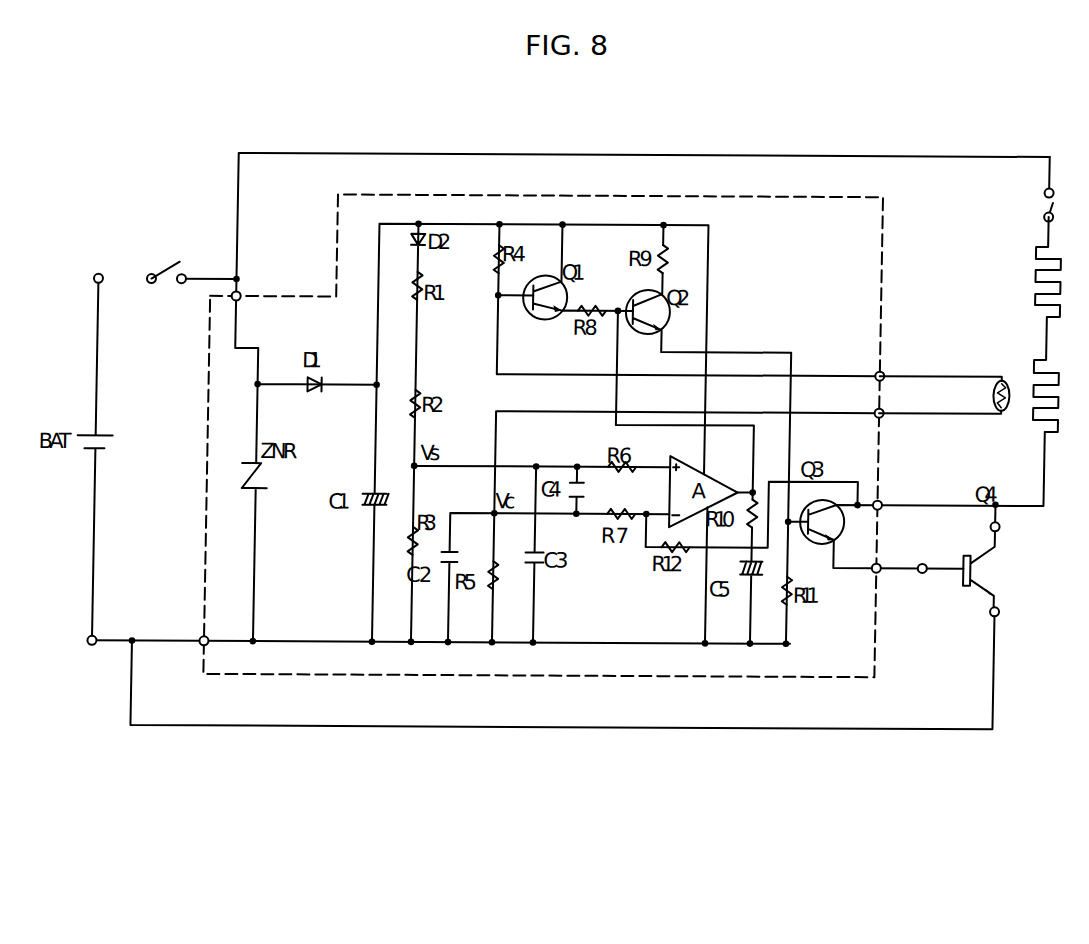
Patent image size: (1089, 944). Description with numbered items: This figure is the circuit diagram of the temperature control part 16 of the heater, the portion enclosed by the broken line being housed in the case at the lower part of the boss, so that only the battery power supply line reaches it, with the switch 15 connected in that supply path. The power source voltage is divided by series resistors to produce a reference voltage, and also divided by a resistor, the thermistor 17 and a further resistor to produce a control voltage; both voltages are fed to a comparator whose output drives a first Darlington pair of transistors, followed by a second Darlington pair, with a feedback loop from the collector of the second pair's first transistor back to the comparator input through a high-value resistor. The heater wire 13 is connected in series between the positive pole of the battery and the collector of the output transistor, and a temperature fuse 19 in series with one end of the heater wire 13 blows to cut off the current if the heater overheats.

The heater wire 13 is at (1064, 310).
The switch 15 is at (179, 263).
The temperature control part 16 is at (593, 737).
The thermistor 17 is at (1005, 377).
The temperature fuse 19 is at (1052, 203).